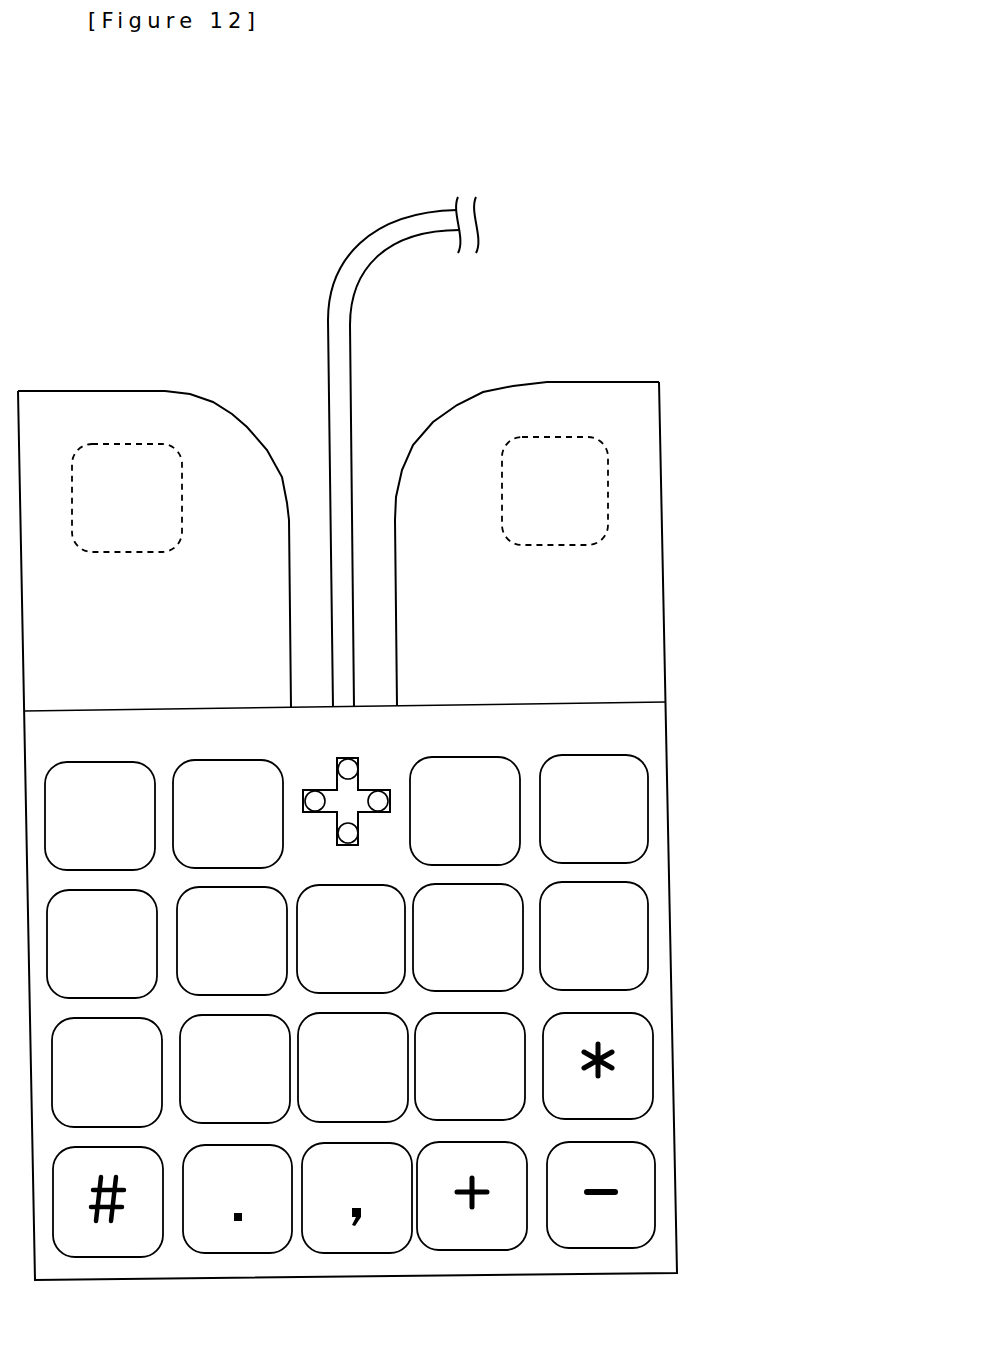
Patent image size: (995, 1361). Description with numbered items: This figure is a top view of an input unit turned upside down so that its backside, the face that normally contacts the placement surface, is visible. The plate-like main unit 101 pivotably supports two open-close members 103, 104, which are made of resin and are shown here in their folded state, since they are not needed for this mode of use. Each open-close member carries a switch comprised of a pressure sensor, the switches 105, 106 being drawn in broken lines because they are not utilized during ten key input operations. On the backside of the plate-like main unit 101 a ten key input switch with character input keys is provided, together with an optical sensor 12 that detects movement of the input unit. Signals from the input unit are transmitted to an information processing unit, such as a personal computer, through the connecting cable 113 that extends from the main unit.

The plate-like main unit 101 is at (657, 741).
The open-close member 103 is at (50, 417).
The open-close member 104 is at (475, 425).
The switch 105 is at (140, 470).
The switch 106 is at (563, 482).
The connecting cable 113 is at (390, 240).
The optical sensor 12 is at (360, 797).